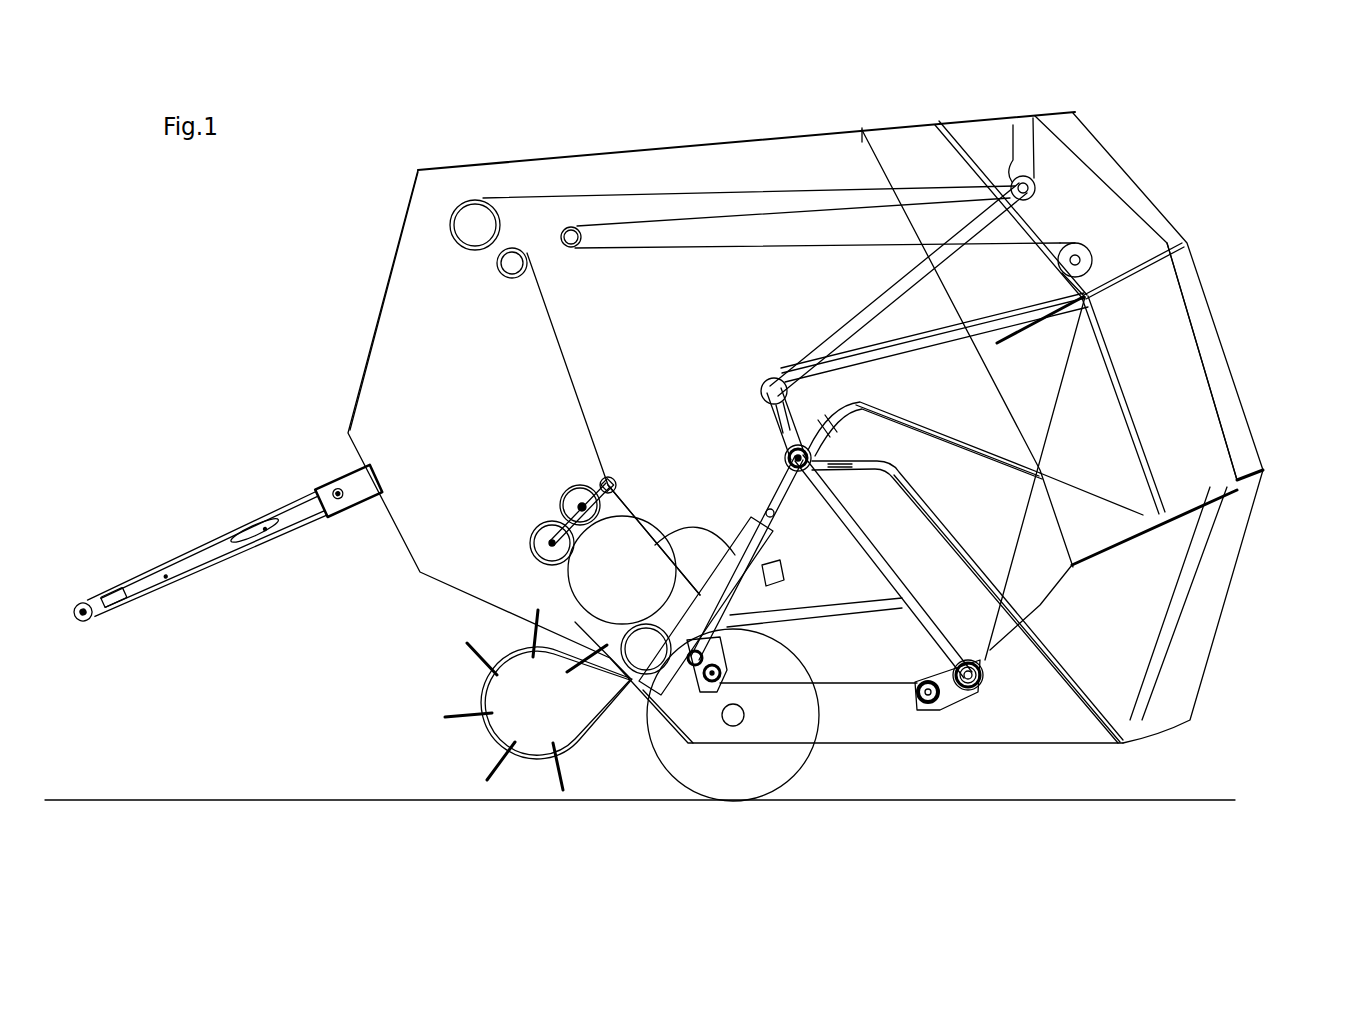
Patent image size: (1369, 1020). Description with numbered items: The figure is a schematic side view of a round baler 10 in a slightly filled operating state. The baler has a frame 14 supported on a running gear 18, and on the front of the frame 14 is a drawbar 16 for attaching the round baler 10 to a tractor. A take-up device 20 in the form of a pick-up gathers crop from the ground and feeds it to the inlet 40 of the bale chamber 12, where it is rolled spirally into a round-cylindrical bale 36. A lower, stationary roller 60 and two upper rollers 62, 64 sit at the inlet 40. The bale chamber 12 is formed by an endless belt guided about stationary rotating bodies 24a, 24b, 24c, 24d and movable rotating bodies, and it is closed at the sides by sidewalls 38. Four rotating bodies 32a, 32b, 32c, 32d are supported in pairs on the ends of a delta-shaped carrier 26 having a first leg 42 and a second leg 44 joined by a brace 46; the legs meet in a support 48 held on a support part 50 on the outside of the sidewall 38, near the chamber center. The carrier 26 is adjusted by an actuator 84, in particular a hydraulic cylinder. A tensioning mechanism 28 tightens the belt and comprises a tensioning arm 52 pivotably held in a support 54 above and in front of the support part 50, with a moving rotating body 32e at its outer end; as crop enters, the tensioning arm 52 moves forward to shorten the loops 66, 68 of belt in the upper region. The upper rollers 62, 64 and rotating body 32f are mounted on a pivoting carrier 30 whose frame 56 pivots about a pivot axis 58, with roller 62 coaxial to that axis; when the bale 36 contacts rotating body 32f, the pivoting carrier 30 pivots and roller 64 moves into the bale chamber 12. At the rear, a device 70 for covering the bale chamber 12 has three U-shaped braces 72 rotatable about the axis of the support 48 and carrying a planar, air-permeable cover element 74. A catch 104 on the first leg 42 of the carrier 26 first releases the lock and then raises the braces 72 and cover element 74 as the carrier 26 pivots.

The round baler 10 is at (228, 330).
The bale chamber 12 is at (665, 380).
The frame 14 is at (385, 258).
The drawbar 16 is at (167, 545).
The running gear 18 is at (680, 759).
The take-up device 20 is at (420, 673).
The stationary rotating body 24a is at (440, 218).
The stationary rotating body 24b is at (512, 272).
The rear stationary rotating body 24c is at (1088, 252).
The rear stationary rotating body 24d is at (580, 227).
The carrier 26 is at (888, 538).
The tensioning mechanism 28 is at (905, 340).
The pivoting carrier 30 is at (652, 499).
The movable rotating body 32a is at (698, 645).
The movable rotating body 32b is at (727, 660).
The movable rotating body 32c is at (912, 698).
The movable rotating body 32d is at (987, 653).
The moving rotating body 32e is at (1013, 160).
The rotating body 32f is at (612, 475).
The bale 36 is at (634, 611).
The sidewall 38 is at (699, 461).
The inlet 40 is at (543, 603).
The first leg 42 is at (763, 510).
The second leg 44 is at (903, 607).
The brace 46 is at (815, 605).
The support 48 is at (757, 432).
The support part 50 is at (812, 452).
The tensioning arm 52 is at (800, 350).
The support 54 is at (760, 380).
The frame 56 is at (588, 488).
The pivot axis 58 is at (565, 505).
The lower stationary roller 60 is at (640, 662).
The upper roller 62 is at (572, 490).
The upper roller 64 is at (530, 540).
The loop 66 is at (762, 192).
The loop 68 is at (680, 247).
The device for covering the bale chamber 70 is at (1252, 296).
The brace 72 is at (945, 440).
The cover element 74 is at (1181, 423).
The actuator 84 is at (663, 535).
The catch 104 is at (767, 580).